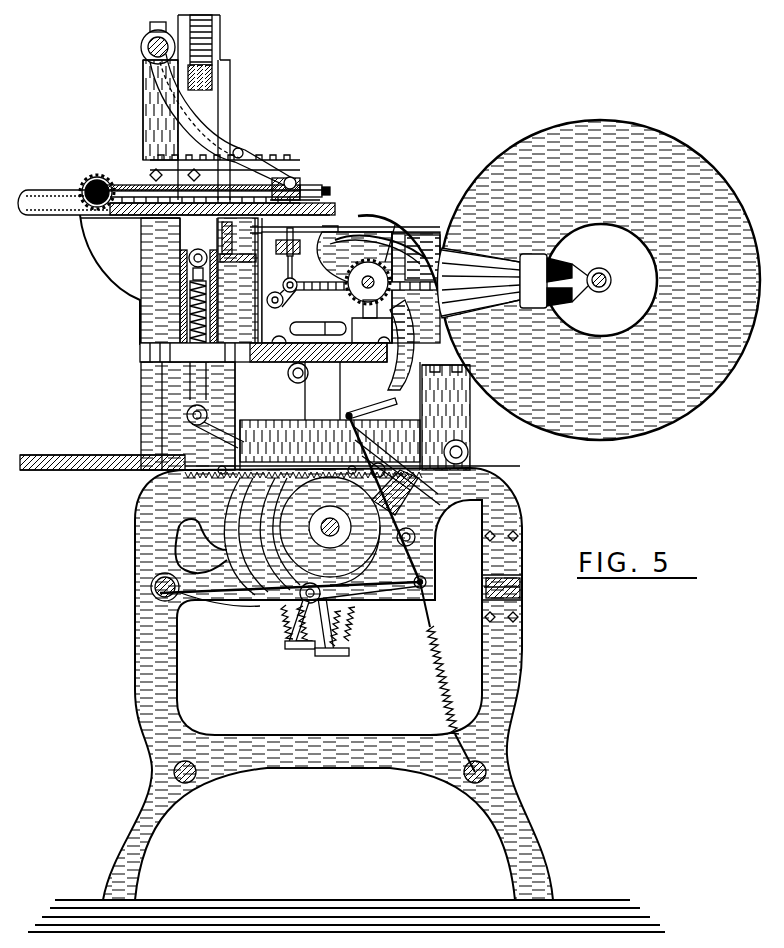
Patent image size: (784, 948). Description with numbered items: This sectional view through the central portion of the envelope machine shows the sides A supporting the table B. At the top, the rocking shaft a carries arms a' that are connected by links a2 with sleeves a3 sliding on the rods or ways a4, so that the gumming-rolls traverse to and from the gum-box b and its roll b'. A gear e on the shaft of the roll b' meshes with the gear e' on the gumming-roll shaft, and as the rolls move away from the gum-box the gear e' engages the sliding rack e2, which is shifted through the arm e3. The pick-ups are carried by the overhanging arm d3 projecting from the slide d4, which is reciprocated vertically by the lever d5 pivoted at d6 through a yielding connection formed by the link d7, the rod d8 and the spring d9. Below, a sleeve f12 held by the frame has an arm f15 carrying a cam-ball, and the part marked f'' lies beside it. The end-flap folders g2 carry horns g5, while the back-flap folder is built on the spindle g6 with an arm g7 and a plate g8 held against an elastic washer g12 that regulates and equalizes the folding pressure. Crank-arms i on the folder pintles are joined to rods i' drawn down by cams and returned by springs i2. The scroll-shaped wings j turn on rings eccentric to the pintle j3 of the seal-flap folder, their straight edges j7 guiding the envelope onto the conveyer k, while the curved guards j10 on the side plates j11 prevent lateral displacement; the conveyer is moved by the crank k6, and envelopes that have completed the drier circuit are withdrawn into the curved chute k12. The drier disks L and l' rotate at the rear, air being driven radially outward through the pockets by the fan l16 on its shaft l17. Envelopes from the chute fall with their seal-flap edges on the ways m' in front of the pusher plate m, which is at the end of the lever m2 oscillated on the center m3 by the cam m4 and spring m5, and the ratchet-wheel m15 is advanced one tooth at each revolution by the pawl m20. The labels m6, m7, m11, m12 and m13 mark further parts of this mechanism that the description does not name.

The sides A is at (328, 684).
The table B is at (138, 353).
The disk L is at (600, 280).
The rocking shaft a is at (137, 43).
The arms a' is at (205, 120).
The links a2 is at (246, 160).
The sleeves a3 is at (294, 200).
The rods or ways a4 is at (330, 190).
The gum-box b is at (169, 185).
The roll b' is at (98, 172).
The overhanging arm d3 is at (212, 48).
The slide d4 is at (212, 20).
The lever d5 is at (190, 432).
The pivot d6 is at (456, 452).
The link d7 is at (188, 395).
The rod d8 is at (190, 276).
The spring d9 is at (190, 318).
The gear e is at (86, 189).
The gear e' is at (295, 180).
The sliding rack e2 is at (288, 165).
The arm e3 is at (178, 134).
The pivot shaft f'' is at (176, 602).
The sleeve f12 is at (200, 602).
The arm f15 is at (248, 606).
The folders g2 is at (328, 228).
The horns g5 is at (336, 238).
The spindle g6 is at (268, 299).
The arm g7 is at (284, 282).
The plate g8 is at (294, 246).
The elastic washer g12 is at (288, 240).
The crank-arms i is at (302, 629).
The rods i' is at (332, 636).
The springs i2 is at (320, 625).
The scroll-shaped wings j is at (377, 270).
The pintle j3 is at (364, 304).
The straight edges j7 is at (396, 224).
The guards j10 is at (378, 218).
The side plates j11 is at (436, 262).
The conveyer k is at (424, 256).
The crank k6 is at (290, 378).
The curved chute k12 is at (410, 330).
The disk l' is at (479, 273).
The revolving fan l16 is at (546, 262).
The shaft l17 is at (612, 282).
The plate m is at (371, 408).
The ways m' is at (412, 588).
The pivoted lever m2 is at (376, 440).
The center m3 is at (414, 598).
The cam m4 is at (201, 546).
The spring m5 is at (430, 658).
The block m6 is at (330, 416).
The cam wheel m7 is at (345, 514).
The link m11 is at (390, 452).
The guide m12 is at (289, 443).
The cam arcs m13 is at (228, 480).
The ratchet-wheel m15 is at (405, 517).
The pawl m20 is at (418, 534).